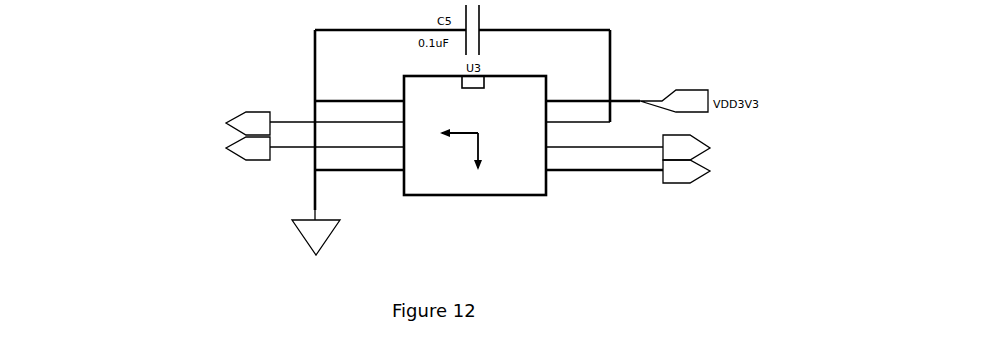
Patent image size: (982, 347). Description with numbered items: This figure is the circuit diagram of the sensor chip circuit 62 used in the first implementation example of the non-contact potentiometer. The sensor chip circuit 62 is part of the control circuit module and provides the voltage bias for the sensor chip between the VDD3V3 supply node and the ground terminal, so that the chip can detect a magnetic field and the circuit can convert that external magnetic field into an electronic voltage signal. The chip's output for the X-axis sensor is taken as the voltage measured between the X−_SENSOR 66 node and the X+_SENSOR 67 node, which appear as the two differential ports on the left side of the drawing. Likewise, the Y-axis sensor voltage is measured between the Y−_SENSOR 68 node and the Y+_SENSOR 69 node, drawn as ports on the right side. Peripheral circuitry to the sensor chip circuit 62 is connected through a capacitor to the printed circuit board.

The sensor chip circuit 62 is at (530, 197).
The X−_SENSOR 66 is at (125, 122).
The X+_SENSOR 67 is at (125, 152).
The Y−_SENSOR 68 is at (805, 153).
The Y+_SENSOR 69 is at (810, 177).